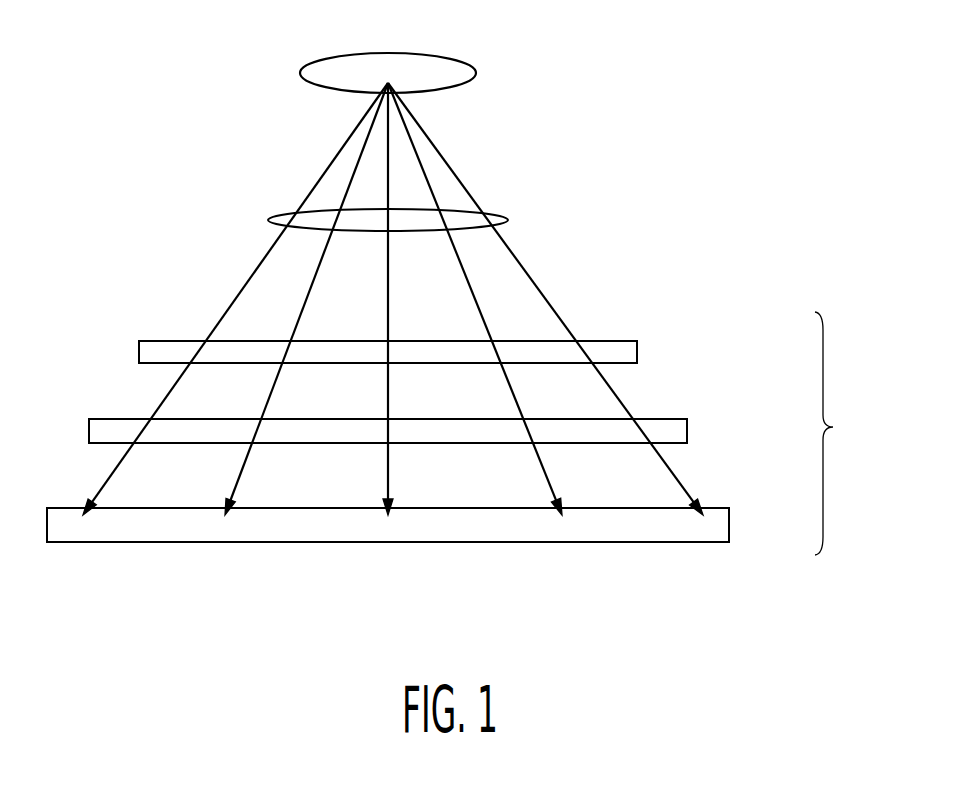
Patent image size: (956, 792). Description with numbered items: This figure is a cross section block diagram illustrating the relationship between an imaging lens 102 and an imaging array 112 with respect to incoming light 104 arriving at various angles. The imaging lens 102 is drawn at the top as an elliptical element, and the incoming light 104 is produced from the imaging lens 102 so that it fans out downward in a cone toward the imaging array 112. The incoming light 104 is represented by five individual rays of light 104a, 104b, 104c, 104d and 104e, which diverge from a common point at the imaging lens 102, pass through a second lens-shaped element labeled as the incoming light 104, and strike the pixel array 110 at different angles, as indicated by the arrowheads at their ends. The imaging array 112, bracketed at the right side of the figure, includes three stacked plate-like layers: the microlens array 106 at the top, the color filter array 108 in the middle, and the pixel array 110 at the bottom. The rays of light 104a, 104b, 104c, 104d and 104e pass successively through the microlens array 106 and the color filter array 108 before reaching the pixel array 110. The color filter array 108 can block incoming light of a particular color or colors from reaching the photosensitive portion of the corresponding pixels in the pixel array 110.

The imaging lens 102 is at (478, 75).
The incoming light 104 is at (508, 217).
The ray of light 104a is at (255, 268).
The ray of light 104b is at (303, 303).
The ray of light 104c is at (390, 265).
The ray of light 104d is at (482, 308).
The ray of light 104e is at (563, 318).
The microlens array 106 is at (637, 352).
The color filter array 108 is at (687, 430).
The pixel array 110 is at (729, 512).
The imaging array 112 is at (844, 433).